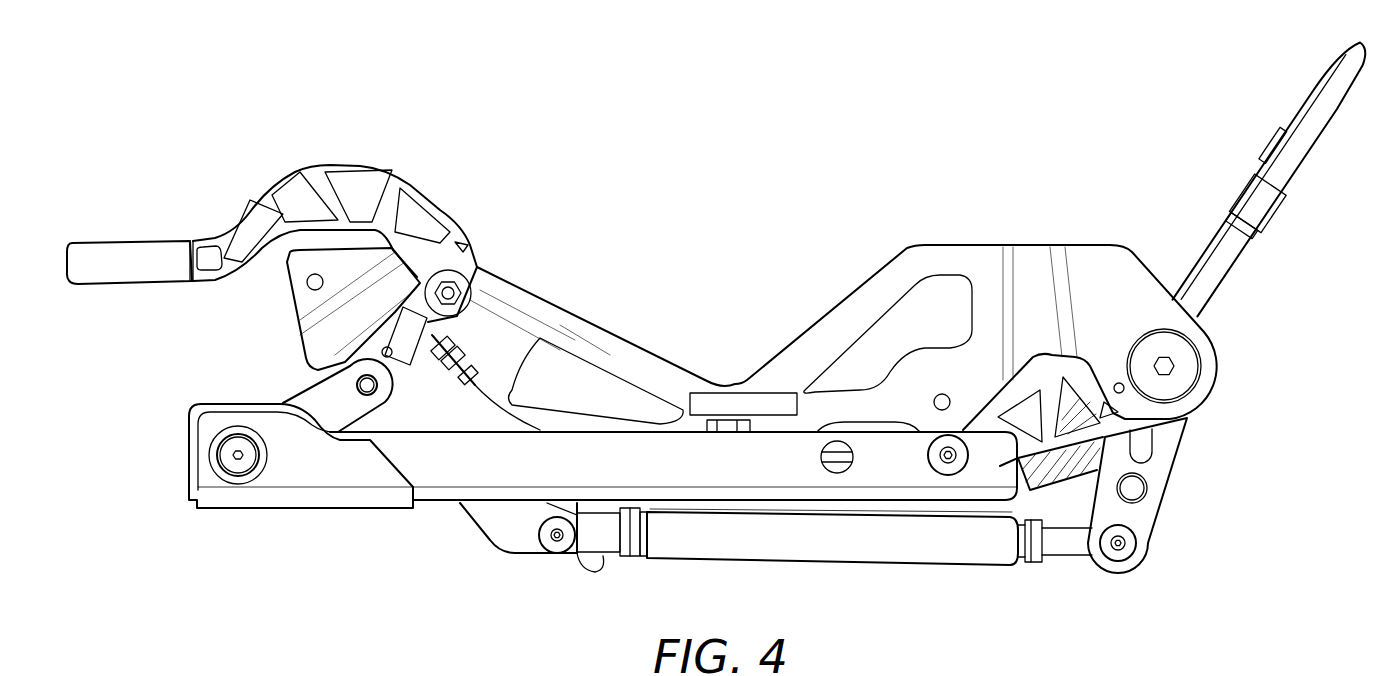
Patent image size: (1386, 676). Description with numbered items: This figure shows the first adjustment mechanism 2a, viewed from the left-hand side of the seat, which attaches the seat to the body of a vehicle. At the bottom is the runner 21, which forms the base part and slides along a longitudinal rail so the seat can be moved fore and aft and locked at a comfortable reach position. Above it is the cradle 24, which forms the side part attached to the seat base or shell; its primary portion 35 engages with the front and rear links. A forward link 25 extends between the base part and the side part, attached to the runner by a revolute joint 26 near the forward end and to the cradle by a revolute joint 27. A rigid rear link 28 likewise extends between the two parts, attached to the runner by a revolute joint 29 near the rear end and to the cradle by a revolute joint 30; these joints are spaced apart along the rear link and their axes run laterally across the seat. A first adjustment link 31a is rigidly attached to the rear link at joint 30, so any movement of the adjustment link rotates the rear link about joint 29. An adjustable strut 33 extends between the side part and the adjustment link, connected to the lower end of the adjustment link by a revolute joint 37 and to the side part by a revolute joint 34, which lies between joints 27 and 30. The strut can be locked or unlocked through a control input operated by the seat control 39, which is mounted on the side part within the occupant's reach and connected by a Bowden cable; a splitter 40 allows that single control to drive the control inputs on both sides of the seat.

The first adjustment mechanism 2a is at (443, 566).
The runner 21 is at (708, 475).
The cradle 24 is at (962, 252).
The forward link 25 is at (315, 400).
The revolute joint 26 is at (239, 458).
The revolute joint 27 is at (320, 366).
The rear link 28 is at (1055, 445).
The revolute joint 29 is at (946, 455).
The revolute joint 30 is at (1172, 367).
The first adjustment link 31a is at (1158, 470).
The adjustable strut 33 is at (893, 550).
The revolute joint 34 is at (557, 538).
The primary portion 35 is at (632, 355).
The revolute joint 37 is at (1118, 546).
The seat control 39 is at (130, 248).
The splitter 40 is at (1238, 258).